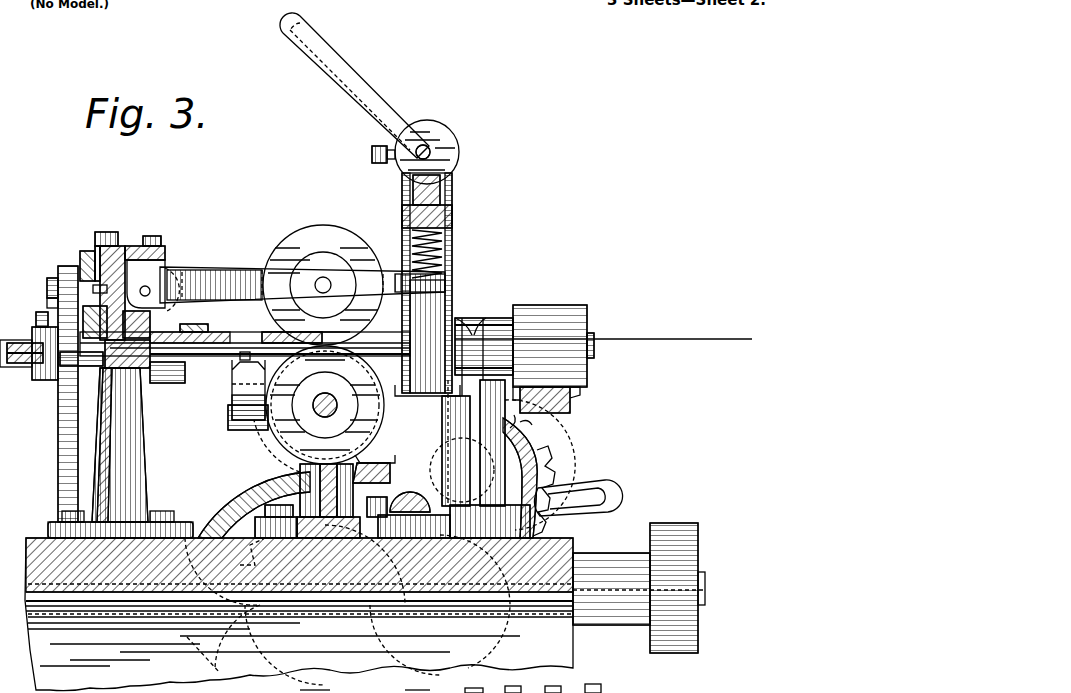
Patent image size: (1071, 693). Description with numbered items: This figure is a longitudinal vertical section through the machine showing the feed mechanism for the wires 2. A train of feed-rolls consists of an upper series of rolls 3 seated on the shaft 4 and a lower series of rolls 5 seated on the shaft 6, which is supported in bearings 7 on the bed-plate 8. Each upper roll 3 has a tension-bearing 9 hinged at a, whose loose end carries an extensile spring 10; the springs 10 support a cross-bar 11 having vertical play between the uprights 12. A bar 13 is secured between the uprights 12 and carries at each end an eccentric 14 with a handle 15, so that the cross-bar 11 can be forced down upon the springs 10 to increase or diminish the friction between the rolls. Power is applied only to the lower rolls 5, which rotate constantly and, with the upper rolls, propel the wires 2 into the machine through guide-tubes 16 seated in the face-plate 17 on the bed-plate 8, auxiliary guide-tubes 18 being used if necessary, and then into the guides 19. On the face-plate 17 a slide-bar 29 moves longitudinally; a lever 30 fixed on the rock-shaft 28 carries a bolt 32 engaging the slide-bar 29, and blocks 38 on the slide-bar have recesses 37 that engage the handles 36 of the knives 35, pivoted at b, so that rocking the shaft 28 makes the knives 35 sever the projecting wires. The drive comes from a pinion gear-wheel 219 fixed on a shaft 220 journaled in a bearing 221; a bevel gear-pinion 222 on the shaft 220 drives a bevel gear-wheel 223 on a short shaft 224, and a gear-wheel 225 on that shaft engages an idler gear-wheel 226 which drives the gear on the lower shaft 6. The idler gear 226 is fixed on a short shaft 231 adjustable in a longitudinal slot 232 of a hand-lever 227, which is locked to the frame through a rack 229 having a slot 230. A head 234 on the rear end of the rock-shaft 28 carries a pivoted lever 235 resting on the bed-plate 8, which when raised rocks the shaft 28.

The wires 2 is at (688, 338).
The upper feed-rolls 3 is at (312, 233).
The shaft 4 is at (325, 294).
The lower feed-rolls 5 is at (270, 432).
The shaft 6 is at (328, 402).
The bearings 7 is at (238, 422).
The bed-plate 8 is at (38, 550).
The tension-bearing 9 is at (236, 282).
The extensile spring 10 is at (440, 242).
The cross-bar 11 is at (452, 216).
The uprights 12 is at (455, 260).
The bar 13 is at (420, 140).
The eccentric 14 is at (458, 147).
The handle 15 is at (343, 90).
The guide-tubes 16 is at (186, 362).
The face-plate 17 is at (73, 300).
The auxiliary guide-tubes 18 is at (238, 368).
The guides 19 is at (28, 370).
The rock-shaft 28 is at (34, 345).
The slide-bar 29 is at (75, 248).
The lever 30 is at (66, 437).
The bolt 32 is at (53, 280).
The knives 35 is at (102, 366).
The handles 36 is at (49, 304).
The recesses 37 is at (450, 683).
The blocks 38 is at (128, 246).
The hinge a is at (151, 290).
The pivot b is at (80, 362).
The pinion gear-wheel 219 is at (672, 524).
The rotating shaft 220 is at (706, 582).
The bearing 221 is at (612, 555).
The bevel gear-pinion 222 is at (178, 636).
The bevel gear-wheel 223 is at (268, 480).
The short shaft 224 is at (422, 644).
The gear-wheel 225 is at (305, 648).
The idler gear-wheel 226 is at (548, 472).
The hand-lever 227 is at (588, 490).
The rack 229 is at (470, 420).
The slot 230 is at (540, 432).
The short shaft 231 is at (446, 467).
The longitudinal slot 232 is at (422, 464).
The head 234 is at (582, 312).
The lever 235 is at (580, 400).